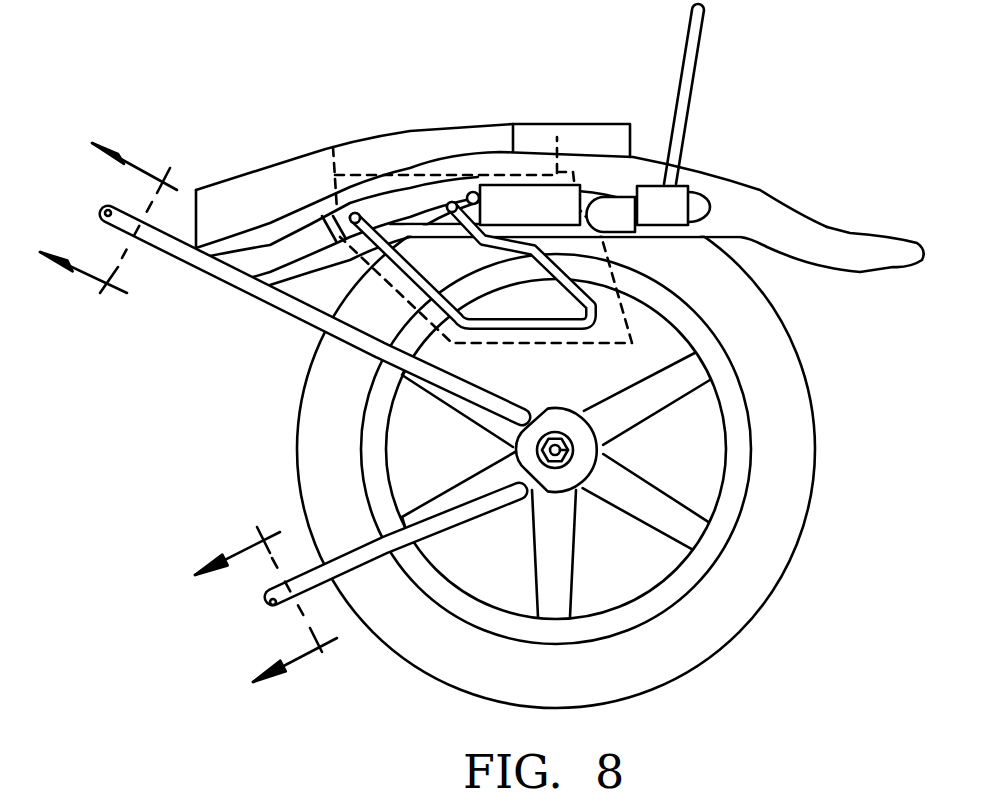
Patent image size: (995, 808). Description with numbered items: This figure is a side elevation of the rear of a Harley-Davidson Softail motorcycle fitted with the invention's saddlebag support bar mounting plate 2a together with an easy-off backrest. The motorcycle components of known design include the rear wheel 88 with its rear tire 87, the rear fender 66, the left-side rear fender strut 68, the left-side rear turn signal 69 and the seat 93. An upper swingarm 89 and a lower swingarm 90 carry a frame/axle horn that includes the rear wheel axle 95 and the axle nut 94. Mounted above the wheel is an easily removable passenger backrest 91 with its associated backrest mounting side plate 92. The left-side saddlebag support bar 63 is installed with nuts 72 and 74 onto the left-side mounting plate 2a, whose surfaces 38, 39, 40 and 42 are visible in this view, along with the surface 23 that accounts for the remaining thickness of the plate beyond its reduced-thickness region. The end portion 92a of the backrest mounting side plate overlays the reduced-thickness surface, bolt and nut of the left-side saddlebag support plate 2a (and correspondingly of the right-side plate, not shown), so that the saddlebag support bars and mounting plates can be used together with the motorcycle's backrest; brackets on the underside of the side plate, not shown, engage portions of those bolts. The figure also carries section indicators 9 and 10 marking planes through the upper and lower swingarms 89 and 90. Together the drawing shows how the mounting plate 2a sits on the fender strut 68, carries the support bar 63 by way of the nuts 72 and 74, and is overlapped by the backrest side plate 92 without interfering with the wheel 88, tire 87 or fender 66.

The saddlebag support bar mounting plate 2a is at (290, 256).
The section line 9- 9 is at (114, 232).
The section line 10- 10 is at (280, 593).
The surface 23 is at (490, 213).
The surface 38 is at (397, 205).
The surface 39 is at (324, 214).
The surface 40 is at (300, 212).
The surface 42 is at (433, 187).
The left-side saddlebag support bar 63 is at (625, 326).
The rear fender 66 is at (800, 230).
The left-side rear fender strut 68 is at (705, 212).
The left-side rear turn signal 69 is at (643, 180).
The nut 72 is at (367, 195).
The nut 74 is at (466, 195).
The rear tire 87 is at (803, 494).
The rear wheel 88 is at (692, 530).
The upper swingarm 89 is at (208, 263).
The lower swingarm 90 is at (293, 603).
The passenger backrest 91 is at (697, 60).
The backrest mounting side plate 92 is at (608, 207).
The end portion of backrest mounting side plate 92a is at (507, 175).
The seat 93 is at (533, 132).
The axle nut 94 is at (603, 450).
The rear wheel axle 95 is at (622, 424).